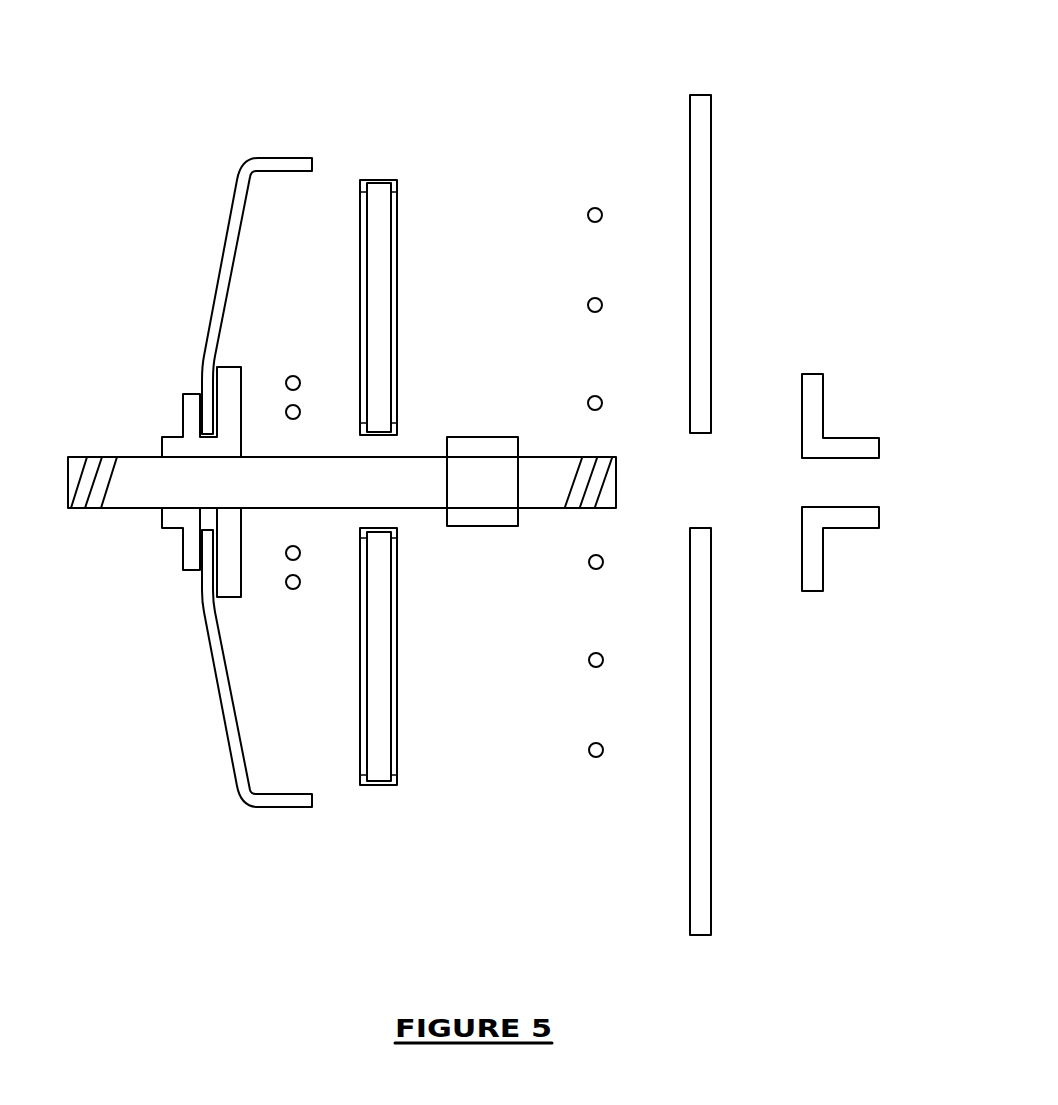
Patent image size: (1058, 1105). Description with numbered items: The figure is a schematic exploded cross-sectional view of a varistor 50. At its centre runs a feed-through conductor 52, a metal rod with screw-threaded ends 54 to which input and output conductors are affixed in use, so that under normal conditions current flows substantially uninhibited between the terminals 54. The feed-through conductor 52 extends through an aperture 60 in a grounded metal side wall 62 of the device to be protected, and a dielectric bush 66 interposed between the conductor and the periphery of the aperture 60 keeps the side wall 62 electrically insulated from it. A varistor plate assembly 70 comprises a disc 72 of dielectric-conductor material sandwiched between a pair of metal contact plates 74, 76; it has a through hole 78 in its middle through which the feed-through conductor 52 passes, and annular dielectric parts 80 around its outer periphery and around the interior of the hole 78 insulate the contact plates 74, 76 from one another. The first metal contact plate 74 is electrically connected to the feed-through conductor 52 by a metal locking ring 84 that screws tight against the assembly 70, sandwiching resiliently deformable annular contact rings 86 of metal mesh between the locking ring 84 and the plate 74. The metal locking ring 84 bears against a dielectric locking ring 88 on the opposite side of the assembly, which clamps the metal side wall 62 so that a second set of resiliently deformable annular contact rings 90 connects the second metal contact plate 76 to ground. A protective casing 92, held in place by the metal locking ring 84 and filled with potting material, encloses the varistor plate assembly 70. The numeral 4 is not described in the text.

The varistor 50 is at (211, 81).
The feed-through conductor 52 is at (342, 482).
The screw-threaded ends 54 is at (93, 473).
The upper clamp 4 is at (188, 408).
The metal locking ring 84 is at (160, 524).
The protective casing 92 is at (235, 232).
The resiliently deformable annular contact rings 86 is at (287, 557).
The dielectric bush 66 is at (496, 447).
The through hole 78 is at (372, 452).
The varistor plate assembly 70 is at (388, 452).
The disc 72 is at (378, 232).
The first metal contact plate 74 is at (362, 288).
The second metal contact plate 76 is at (392, 299).
The annular dielectric parts 80 is at (397, 179).
The aperture 60 is at (710, 492).
The metal side wall 62 is at (700, 146).
The dielectric locking ring 88 is at (858, 444).
The second set of resiliently deformable annular contact rings 90 is at (601, 566).